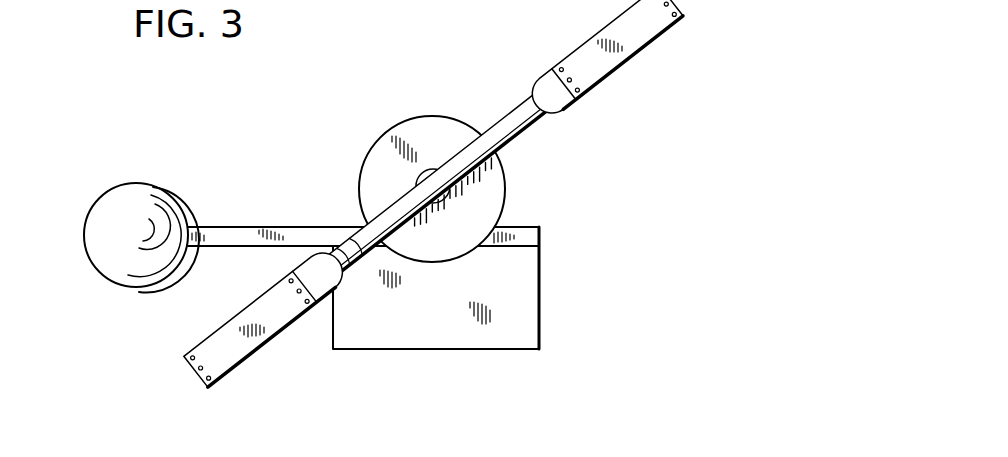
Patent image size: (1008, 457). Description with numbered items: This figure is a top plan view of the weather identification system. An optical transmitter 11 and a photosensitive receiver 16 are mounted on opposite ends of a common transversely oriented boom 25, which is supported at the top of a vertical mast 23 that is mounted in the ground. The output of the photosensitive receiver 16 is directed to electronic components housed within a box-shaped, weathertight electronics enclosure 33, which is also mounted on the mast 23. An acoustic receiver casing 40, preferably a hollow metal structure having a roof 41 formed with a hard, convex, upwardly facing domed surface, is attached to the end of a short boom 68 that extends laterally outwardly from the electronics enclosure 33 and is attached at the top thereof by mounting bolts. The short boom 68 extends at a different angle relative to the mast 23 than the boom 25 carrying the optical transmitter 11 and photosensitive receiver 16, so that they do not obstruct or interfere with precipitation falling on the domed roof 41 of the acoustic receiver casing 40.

The optical transmitter 11 is at (237, 343).
The photosensitive receiver 16 is at (627, 27).
The mast 23 is at (430, 170).
The boom 25 is at (500, 132).
The electronics enclosure 33 is at (517, 296).
The acoustic receiver casing 40 is at (126, 196).
The roof 41 is at (107, 208).
The short boom 68 is at (300, 232).